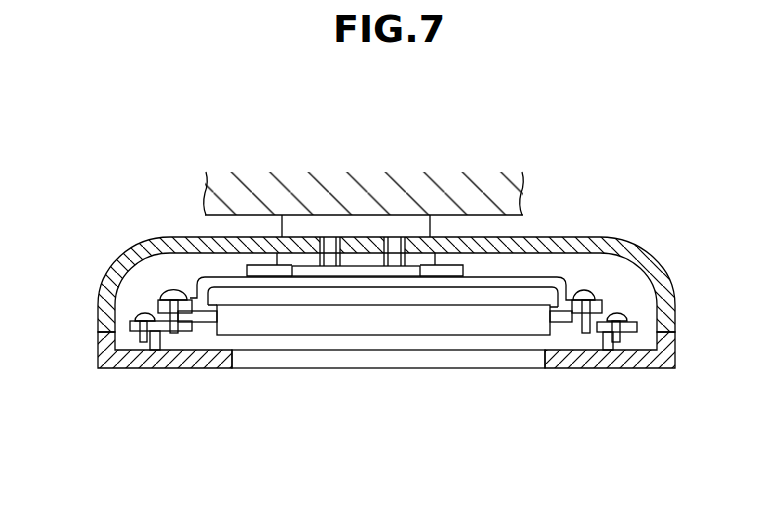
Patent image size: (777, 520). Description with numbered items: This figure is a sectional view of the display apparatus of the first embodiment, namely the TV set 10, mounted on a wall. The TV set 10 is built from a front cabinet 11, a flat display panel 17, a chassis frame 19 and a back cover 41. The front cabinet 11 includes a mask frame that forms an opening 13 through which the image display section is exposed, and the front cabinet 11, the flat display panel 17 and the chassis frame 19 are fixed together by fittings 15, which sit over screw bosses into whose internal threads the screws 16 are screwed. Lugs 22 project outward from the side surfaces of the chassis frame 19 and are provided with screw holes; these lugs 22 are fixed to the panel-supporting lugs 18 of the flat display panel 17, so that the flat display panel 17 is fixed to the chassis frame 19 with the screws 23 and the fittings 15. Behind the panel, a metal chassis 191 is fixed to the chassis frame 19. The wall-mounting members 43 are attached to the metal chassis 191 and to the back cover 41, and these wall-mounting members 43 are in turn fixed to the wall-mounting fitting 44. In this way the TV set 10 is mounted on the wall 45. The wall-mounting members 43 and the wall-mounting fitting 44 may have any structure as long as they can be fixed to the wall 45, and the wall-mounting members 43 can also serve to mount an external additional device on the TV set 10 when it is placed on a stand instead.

The TV set 10 is at (350, 395).
The front cabinet 11 is at (122, 368).
The opening 13 is at (270, 355).
The fittings 15 is at (188, 330).
The screws 16 is at (138, 318).
The flat display panel 17 is at (400, 320).
The lugs 18 is at (204, 322).
The chassis frame 19 is at (520, 285).
The lugs 22 is at (159, 305).
The screws 23 is at (164, 296).
The back cover 41 is at (616, 238).
The wall-mounting members 43 is at (333, 250).
The wall-mounting fitting 44 is at (410, 224).
The wall 45 is at (241, 200).
The metal chassis 191 is at (449, 256).